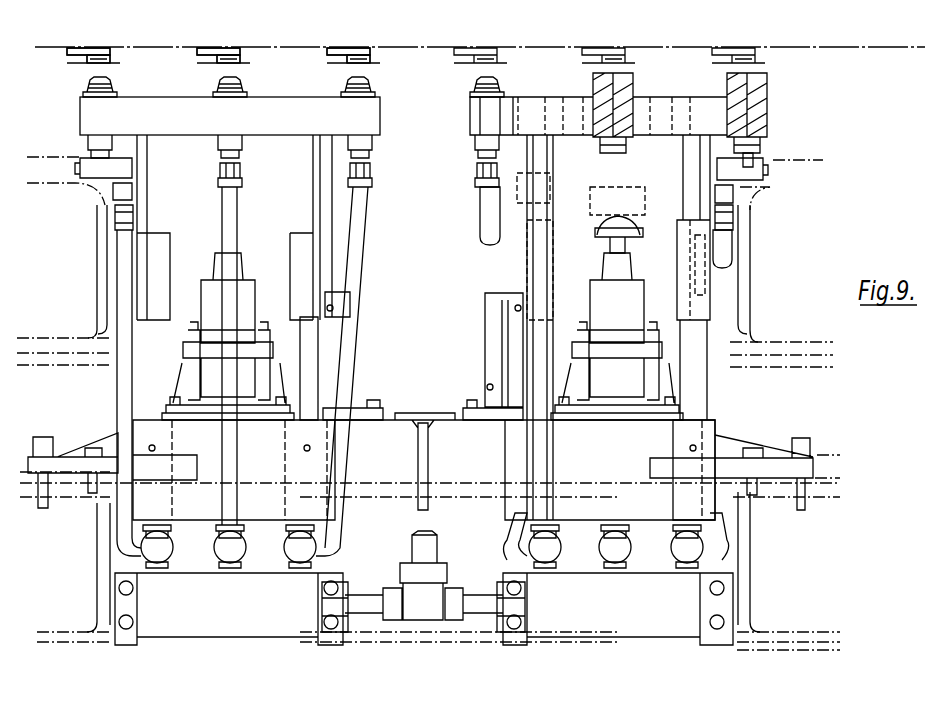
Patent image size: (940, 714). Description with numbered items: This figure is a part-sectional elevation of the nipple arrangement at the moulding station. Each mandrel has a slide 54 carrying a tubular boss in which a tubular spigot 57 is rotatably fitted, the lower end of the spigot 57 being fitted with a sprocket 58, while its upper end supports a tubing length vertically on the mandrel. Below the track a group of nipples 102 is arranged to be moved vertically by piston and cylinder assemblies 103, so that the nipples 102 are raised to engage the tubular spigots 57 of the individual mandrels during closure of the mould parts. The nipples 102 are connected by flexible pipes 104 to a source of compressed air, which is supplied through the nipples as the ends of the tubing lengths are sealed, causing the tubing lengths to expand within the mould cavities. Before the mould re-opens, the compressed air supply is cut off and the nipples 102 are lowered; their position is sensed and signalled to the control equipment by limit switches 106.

The slide 54 is at (178, 50).
The tubular spigot 57 is at (112, 62).
The sprocket 58 is at (80, 62).
The nipple 102 is at (112, 85).
The piston and cylinder assembly 103 is at (248, 307).
The flexible pipe 104 is at (125, 376).
The limit switch 106 is at (540, 355).